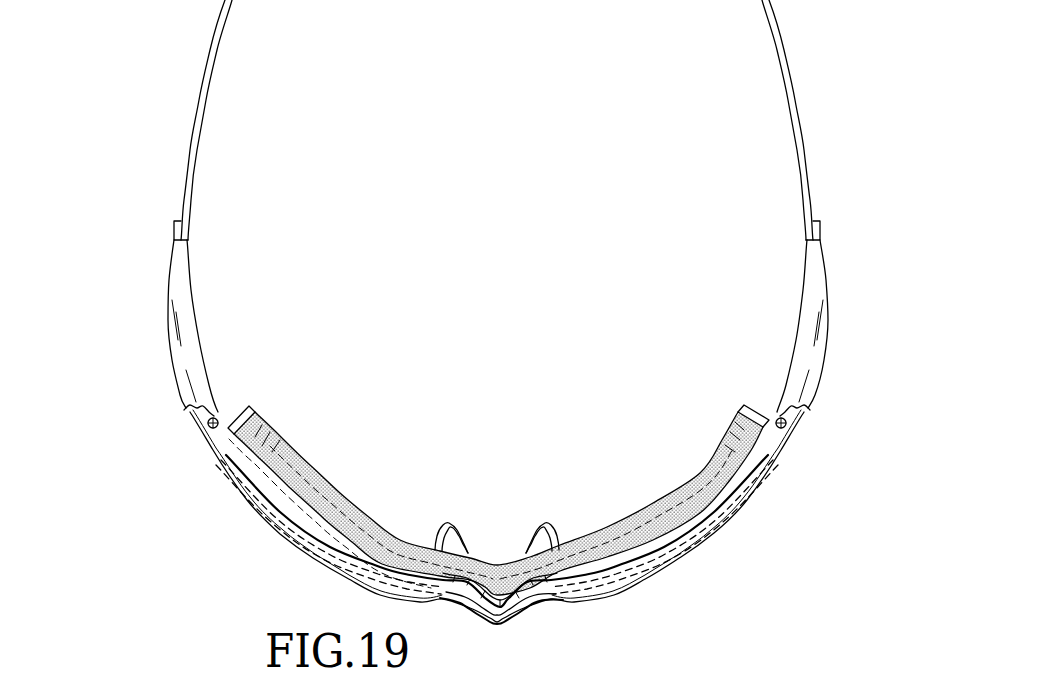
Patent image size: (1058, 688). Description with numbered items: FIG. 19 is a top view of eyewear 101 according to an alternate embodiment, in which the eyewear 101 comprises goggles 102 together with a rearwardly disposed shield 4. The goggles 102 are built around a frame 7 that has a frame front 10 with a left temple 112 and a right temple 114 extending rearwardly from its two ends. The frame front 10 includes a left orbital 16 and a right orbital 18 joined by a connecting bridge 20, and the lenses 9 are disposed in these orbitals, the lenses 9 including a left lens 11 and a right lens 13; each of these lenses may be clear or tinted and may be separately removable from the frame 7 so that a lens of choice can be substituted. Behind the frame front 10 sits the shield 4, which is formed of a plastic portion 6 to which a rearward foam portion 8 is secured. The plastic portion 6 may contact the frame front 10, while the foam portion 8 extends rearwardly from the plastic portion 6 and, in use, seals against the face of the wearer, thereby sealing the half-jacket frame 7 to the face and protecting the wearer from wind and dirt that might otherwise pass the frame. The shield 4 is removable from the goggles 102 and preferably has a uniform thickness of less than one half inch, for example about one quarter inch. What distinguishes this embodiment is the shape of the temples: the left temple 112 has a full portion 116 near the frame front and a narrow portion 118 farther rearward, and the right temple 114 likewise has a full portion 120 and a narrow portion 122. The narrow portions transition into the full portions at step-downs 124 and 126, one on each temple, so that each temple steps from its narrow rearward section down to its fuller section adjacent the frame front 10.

The eyewear 101 is at (148, 577).
The goggles 102 is at (207, 499).
The left temple 112 is at (134, 127).
The right temple 114 is at (874, 117).
The full portion 116 is at (170, 282).
The narrow portion 118 is at (182, 203).
The full portion 120 is at (826, 266).
The narrow portion 122 is at (810, 177).
The step-down 124 is at (182, 224).
The step-down 126 is at (812, 218).
The frame front 10 is at (206, 441).
The frame 7 is at (797, 332).
The plastic portion 6 is at (233, 425).
The foam portion 8 is at (257, 418).
The left lens 11 is at (304, 492).
The right lens 13 is at (640, 514).
The lenses 9 is at (583, 550).
The left orbital 16 is at (292, 546).
The right orbital 18 is at (650, 575).
The connecting bridge 20 is at (513, 613).
The shield 4 is at (768, 416).